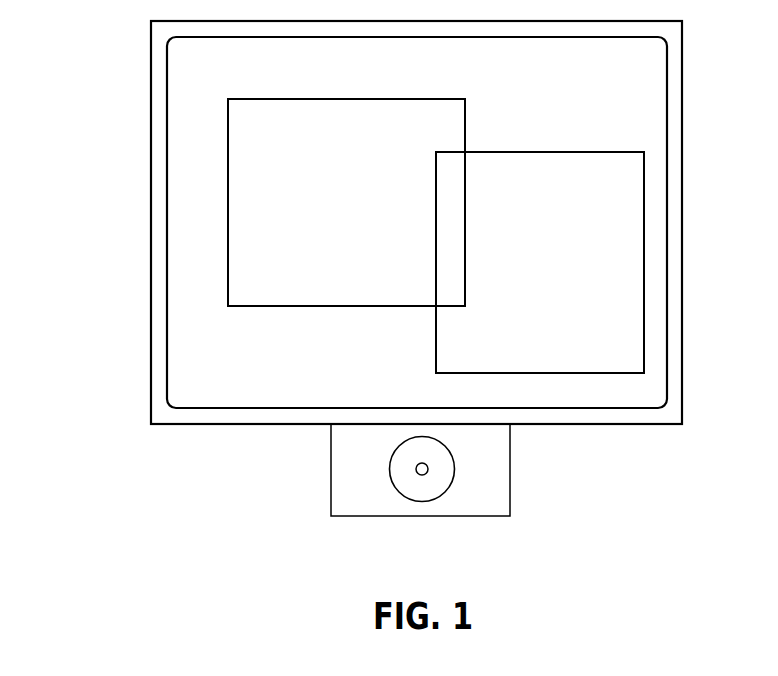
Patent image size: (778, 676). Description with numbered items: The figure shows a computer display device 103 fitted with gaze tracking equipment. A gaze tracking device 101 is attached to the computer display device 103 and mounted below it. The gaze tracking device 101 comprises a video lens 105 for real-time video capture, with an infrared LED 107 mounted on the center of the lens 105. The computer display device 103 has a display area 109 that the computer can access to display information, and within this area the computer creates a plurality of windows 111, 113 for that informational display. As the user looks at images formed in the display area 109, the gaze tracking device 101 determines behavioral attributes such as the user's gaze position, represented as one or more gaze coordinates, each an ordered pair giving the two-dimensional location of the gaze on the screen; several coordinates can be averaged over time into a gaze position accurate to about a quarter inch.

The gaze tracking device 101 is at (331, 470).
The computer display device 103 is at (151, 200).
The video lens 105 is at (437, 497).
The infrared LED 107 is at (428, 469).
The display area 109 is at (437, 78).
The window 111 is at (361, 204).
The window 113 is at (562, 261).